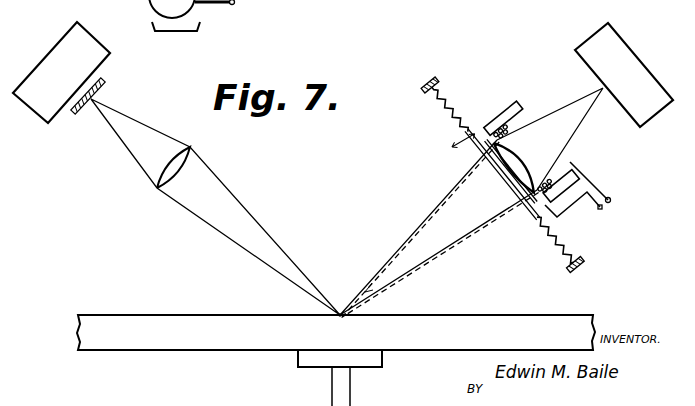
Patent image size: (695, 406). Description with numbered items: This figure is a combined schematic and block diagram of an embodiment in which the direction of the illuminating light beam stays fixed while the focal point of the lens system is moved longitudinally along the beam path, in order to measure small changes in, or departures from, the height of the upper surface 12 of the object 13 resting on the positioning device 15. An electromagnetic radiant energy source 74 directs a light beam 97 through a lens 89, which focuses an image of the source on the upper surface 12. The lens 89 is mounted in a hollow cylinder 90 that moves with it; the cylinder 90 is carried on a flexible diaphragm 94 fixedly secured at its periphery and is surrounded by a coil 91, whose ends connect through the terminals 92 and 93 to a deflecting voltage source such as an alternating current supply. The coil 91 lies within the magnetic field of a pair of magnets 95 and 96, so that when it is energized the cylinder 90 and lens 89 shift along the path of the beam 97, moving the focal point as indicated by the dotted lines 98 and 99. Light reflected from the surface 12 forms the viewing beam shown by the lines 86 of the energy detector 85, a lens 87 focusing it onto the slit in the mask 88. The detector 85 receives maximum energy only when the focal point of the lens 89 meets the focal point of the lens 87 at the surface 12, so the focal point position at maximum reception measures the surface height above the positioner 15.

The upper surface 12 is at (160, 315).
The object 13 is at (433, 321).
The positioning device 15 is at (337, 381).
The electromagnetic radiant energy source 74 is at (655, 120).
The energy detector 85 is at (100, 43).
The viewing beam lines 86 is at (243, 205).
The lens 87 is at (160, 175).
The mask 88 is at (103, 82).
The lens 89 is at (512, 172).
The hollow cylinder 90 is at (527, 161).
The coil 91 is at (538, 206).
The terminal 92 is at (600, 209).
The terminal 93 is at (611, 200).
The flexible diaphragm 94 is at (460, 122).
The magnet 95 is at (515, 104).
The magnet 96 is at (572, 173).
The light beam 97 is at (578, 127).
The dotted line 98 is at (338, 318).
The dotted line 99 is at (378, 280).